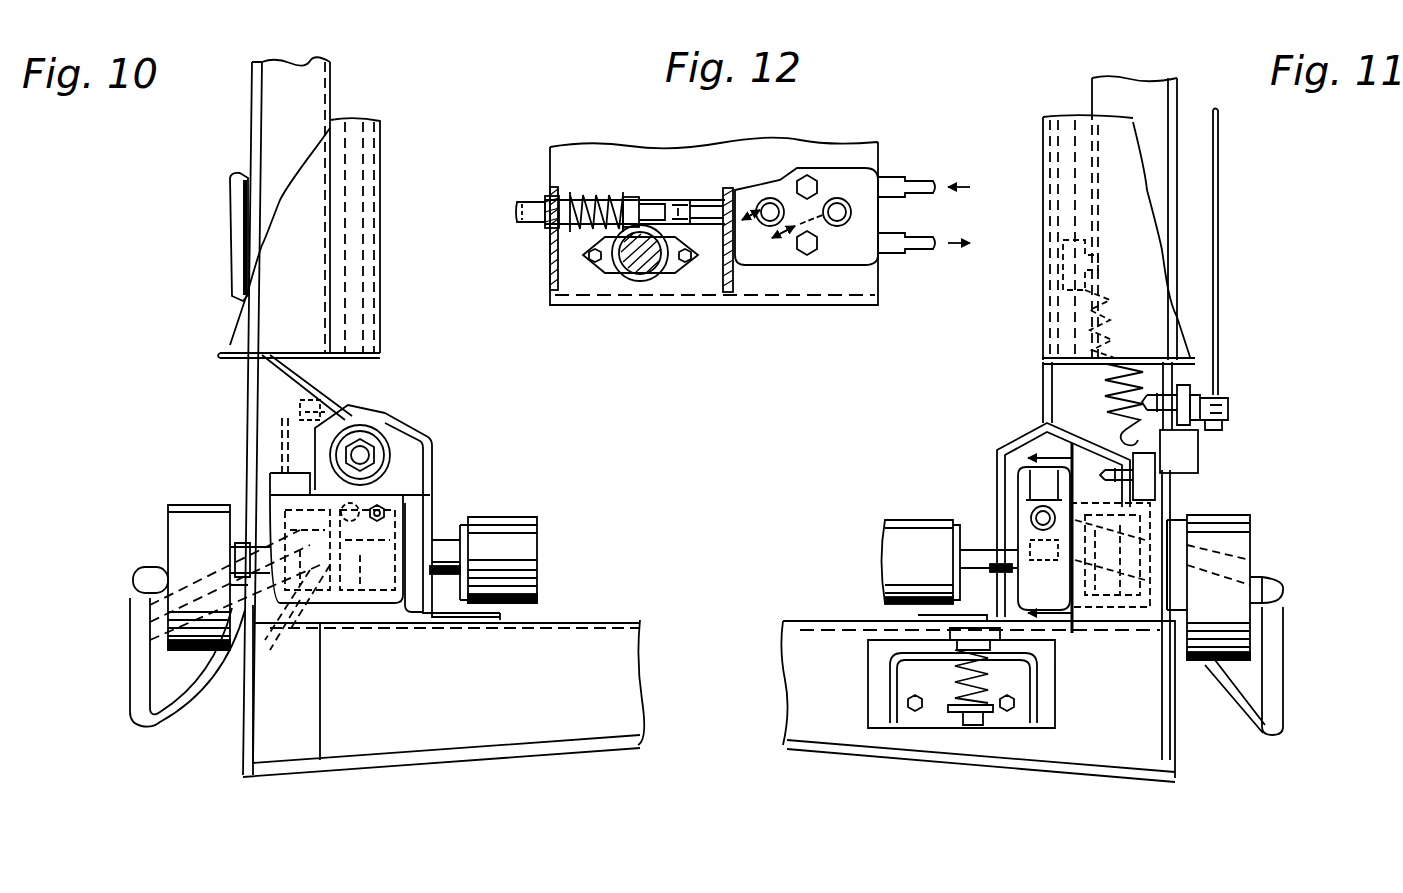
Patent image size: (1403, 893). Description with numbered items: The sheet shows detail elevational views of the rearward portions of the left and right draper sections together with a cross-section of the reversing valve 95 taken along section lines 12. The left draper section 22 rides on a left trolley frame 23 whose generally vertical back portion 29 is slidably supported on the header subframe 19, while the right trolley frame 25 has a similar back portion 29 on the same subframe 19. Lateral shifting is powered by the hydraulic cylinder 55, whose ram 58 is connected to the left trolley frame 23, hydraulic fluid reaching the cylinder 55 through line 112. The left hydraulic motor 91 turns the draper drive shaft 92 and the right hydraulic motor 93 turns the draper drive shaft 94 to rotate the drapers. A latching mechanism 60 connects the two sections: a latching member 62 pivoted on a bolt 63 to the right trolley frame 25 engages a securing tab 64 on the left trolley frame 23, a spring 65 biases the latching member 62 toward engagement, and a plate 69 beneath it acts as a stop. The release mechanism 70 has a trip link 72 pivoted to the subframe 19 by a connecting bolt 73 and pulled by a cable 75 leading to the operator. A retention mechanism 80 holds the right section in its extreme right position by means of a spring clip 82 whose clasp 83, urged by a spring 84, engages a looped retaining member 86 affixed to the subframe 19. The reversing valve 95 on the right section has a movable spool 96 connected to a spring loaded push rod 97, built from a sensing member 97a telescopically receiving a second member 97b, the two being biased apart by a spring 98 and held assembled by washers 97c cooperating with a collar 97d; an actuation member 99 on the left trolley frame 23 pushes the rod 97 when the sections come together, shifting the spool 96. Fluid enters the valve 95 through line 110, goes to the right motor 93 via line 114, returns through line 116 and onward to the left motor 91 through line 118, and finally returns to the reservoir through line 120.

In FIG. 10, the header subframe 19 is at (305, 95).
In FIG. 11, the header subframe 19 is at (1107, 100).
In FIG. 10, the vertical back portion 29 is at (372, 160).
In FIG. 11, the vertical back portion 29 is at (1043, 292).
In FIG. 10, the line 112 is at (232, 208).
In FIG. 10, the ram 58 is at (375, 445).
In FIG. 10, the hydraulic cylinder 55 is at (385, 415).
In FIG. 10, the left trolley frame 23 is at (388, 420).
In FIG. 10, the left draper section 22 is at (500, 446).
In FIG. 10, the securing tab 64 is at (268, 472).
In FIG. 10, the latching member 62 is at (275, 440).
In FIG. 11, the latching member 62 is at (1197, 455).
In FIG. 10, the hydraulic motor 91 is at (168, 508).
In FIG. 10, the line 118 is at (382, 492).
In FIG. 12, the line 118 is at (911, 236).
In FIG. 10, the actuation member 99 is at (358, 508).
In FIG. 10, the line 120 is at (410, 518).
In FIG. 10, the draper drive shaft 92 is at (452, 570).
In FIG. 12, the right trolley frame 25 is at (762, 153).
In FIG. 11, the right trolley frame 25 is at (1040, 425).
In FIG. 12, the push rod 97 is at (604, 212).
In FIG. 11, the push rod 97 is at (1035, 510).
In FIG. 12, the sensing member 97a is at (530, 222).
In FIG. 12, the second member 97b is at (667, 205).
In FIG. 12, the washers 97c is at (628, 195).
In FIG. 12, the collar 97d is at (557, 183).
In FIG. 12, the spring 98 is at (606, 162).
In FIG. 12, the spool 96 is at (700, 207).
In FIG. 12, the draper drive shaft 94 is at (635, 270).
In FIG. 11, the draper drive shaft 94 is at (975, 555).
In FIG. 12, the line 116 is at (767, 218).
In FIG. 11, the line 116 is at (1268, 588).
In FIG. 12, the line 114 is at (837, 220).
In FIG. 11, the line 114 is at (1283, 598).
In FIG. 12, the reversing valve 95 is at (857, 252).
In FIG. 11, the reversing valve 95 is at (1022, 470).
In FIG. 12, the line 110 is at (908, 178).
In FIG. 11, the cable 75 is at (1219, 292).
In FIG. 11, the release mechanism 70 is at (1250, 299).
In FIG. 11, the spring 65 is at (1143, 380).
In FIG. 11, the trip link 72 is at (1180, 386).
In FIG. 11, the connecting bolt 73 is at (1212, 398).
In FIG. 11, the inter-trolley latching mechanism 60 is at (1290, 442).
In FIG. 11, the bolt 63 is at (1172, 477).
In FIG. 11, the plate 69 is at (1165, 498).
In FIG. 11, the section line 12 is at (1077, 530).
In FIG. 11, the hydraulic motor 93 is at (1240, 545).
In FIG. 11, the looped retaining member 86 is at (885, 652).
In FIG. 11, the clasp 83 is at (955, 642).
In FIG. 11, the spring 84 is at (960, 690).
In FIG. 11, the spring clip 82 is at (1003, 643).
In FIG. 11, the retention mechanism 80 is at (950, 797).